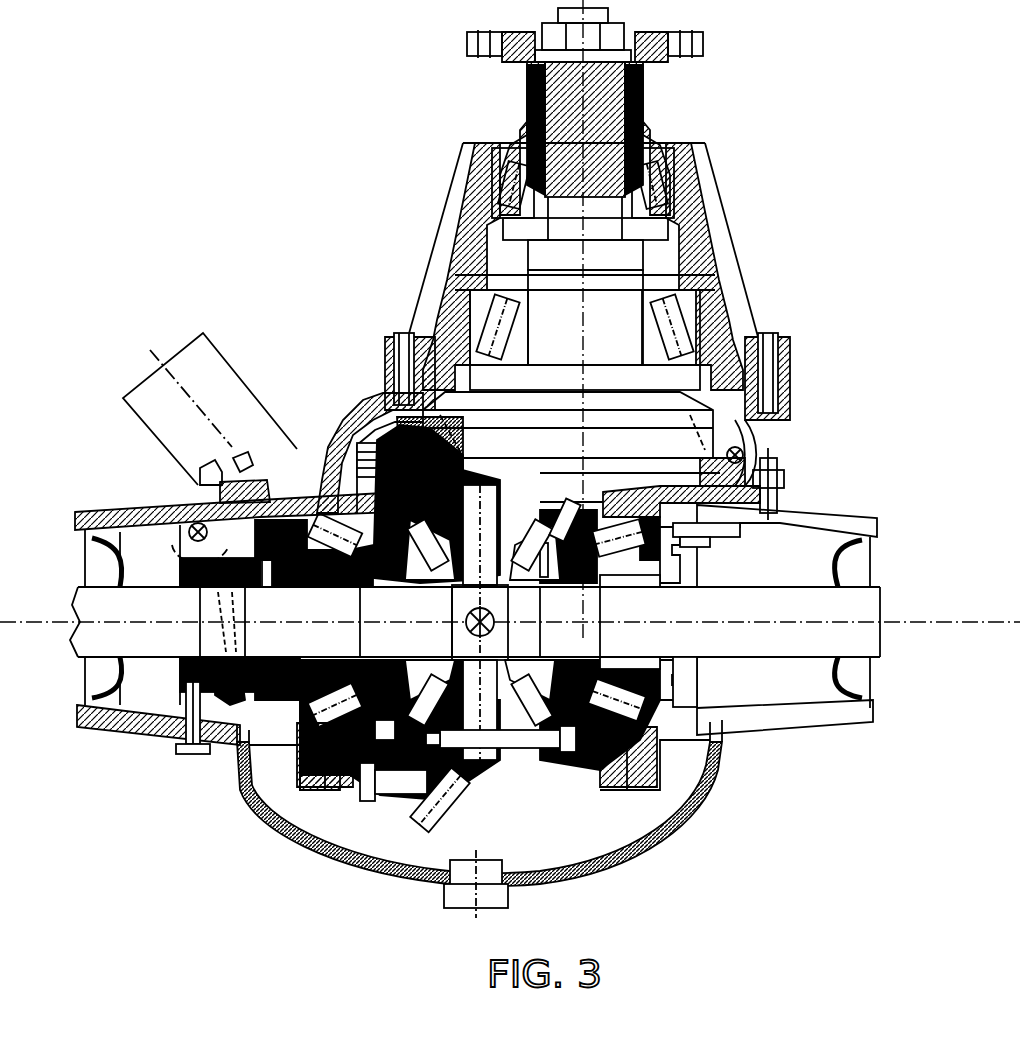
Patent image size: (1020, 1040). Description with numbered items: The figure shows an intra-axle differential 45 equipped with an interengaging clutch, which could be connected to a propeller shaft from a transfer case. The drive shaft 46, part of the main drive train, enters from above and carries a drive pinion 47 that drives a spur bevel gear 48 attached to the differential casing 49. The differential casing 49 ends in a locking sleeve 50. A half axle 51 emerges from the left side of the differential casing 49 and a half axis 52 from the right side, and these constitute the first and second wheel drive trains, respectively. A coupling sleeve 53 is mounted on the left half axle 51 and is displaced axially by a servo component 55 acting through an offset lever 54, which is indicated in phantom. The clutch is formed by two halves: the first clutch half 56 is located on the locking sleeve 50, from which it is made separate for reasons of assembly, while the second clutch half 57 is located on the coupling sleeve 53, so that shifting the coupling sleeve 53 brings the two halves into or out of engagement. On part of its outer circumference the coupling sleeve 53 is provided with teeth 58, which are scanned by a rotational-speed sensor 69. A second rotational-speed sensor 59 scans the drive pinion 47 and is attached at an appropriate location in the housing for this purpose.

The intra-axle differential 45 is at (414, 278).
The drive shaft 46 is at (555, 100).
The drive pinion 47 is at (665, 415).
The spur bevel gear 48 is at (420, 833).
The differential casing 49 is at (380, 803).
The locking sleeve 50 is at (310, 790).
The half axle 51 is at (78, 640).
The half axis 52 is at (765, 642).
The coupling sleeve 53 is at (238, 692).
The offset lever 54 is at (195, 480).
The servo component 55 is at (200, 488).
The first clutch half 56 is at (290, 485).
The second clutch half 57 is at (262, 484).
The teeth 58 is at (150, 737).
The second rotational-speed sensor 59 is at (745, 462).
The rotational-speed sensor 69 is at (186, 747).